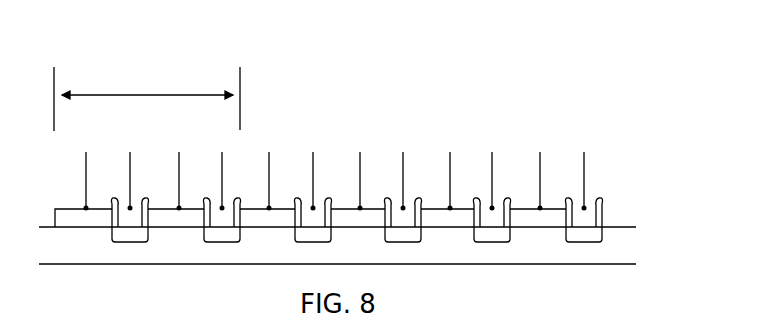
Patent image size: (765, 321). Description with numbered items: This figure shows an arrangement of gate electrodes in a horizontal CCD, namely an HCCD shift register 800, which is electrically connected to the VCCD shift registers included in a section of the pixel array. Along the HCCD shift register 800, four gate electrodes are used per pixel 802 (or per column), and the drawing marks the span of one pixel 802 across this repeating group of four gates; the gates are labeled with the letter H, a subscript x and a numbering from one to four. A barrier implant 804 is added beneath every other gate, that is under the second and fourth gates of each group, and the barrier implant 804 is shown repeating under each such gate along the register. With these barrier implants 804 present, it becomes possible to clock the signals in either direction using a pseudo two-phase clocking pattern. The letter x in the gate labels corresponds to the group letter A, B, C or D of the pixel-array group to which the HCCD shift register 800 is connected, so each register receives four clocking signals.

The HCCD shift register 800 is at (592, 78).
The pixel 802 is at (147, 99).
The barrier implant 804 is at (132, 234).